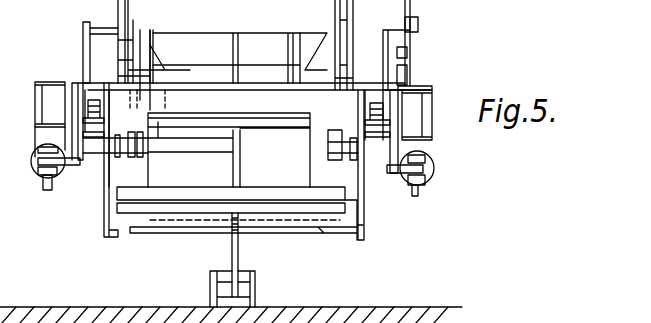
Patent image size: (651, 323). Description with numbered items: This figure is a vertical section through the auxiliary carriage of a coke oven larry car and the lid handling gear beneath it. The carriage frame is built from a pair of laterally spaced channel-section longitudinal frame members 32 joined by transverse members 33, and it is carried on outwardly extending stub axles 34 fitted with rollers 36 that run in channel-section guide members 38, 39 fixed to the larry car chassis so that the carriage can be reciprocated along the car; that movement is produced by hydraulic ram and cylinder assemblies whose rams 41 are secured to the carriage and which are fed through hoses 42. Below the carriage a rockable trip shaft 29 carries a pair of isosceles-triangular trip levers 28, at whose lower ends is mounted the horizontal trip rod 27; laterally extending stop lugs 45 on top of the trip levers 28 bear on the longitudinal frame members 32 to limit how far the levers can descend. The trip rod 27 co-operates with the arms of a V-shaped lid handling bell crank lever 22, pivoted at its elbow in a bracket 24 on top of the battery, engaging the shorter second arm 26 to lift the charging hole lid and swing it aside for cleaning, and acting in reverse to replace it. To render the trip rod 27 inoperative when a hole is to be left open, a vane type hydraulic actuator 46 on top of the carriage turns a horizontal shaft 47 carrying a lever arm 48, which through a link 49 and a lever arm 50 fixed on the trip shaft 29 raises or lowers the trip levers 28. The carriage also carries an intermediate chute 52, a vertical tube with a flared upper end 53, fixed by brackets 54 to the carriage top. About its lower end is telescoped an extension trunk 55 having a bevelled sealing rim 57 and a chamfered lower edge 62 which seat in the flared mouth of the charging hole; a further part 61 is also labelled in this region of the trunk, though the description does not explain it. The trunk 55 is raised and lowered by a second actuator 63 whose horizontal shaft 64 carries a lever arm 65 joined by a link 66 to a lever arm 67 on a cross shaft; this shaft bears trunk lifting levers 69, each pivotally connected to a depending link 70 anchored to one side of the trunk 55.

The lid handling bell crank lever 22 is at (245, 264).
The bracket 24 is at (210, 282).
The second arm 26 is at (230, 236).
The trip member 27 is at (325, 228).
The trip levers 28 is at (108, 233).
The rockable trip shaft 29 is at (289, 151).
The longitudinal frame members 32 is at (68, 128).
The transverse members 33 is at (264, 103).
The stub axle 34 is at (420, 122).
The roller 36 is at (53, 117).
The guide member 38 is at (432, 100).
The guide member 39 is at (46, 80).
The rams 41 is at (52, 172).
The hoses 42 is at (50, 190).
The stop lugs 45 is at (88, 80).
The vane type hydraulic actuator 46 is at (92, 30).
The horizontal shaft 47 is at (127, 55).
The lever arm 48 is at (138, 28).
The link 49 is at (152, 45).
The lever arm 50 is at (143, 146).
The intermediate chute 52 is at (243, 72).
The flared upper end 53 is at (263, 50).
The brackets 54 is at (233, 49).
The extension trunk 55 is at (243, 246).
The sealing rim 57 is at (150, 224).
The spacer 61 is at (104, 218).
The chamfered lower edge 62 is at (156, 232).
The actuator 63 is at (410, 18).
The horizontal shaft 64 is at (407, 52).
The lever arm 65 is at (385, 60).
The link 66 is at (418, 28).
The lever arm 67 is at (408, 72).
The trunk lifting levers 69 is at (130, 15).
The depending link 70 is at (130, 22).